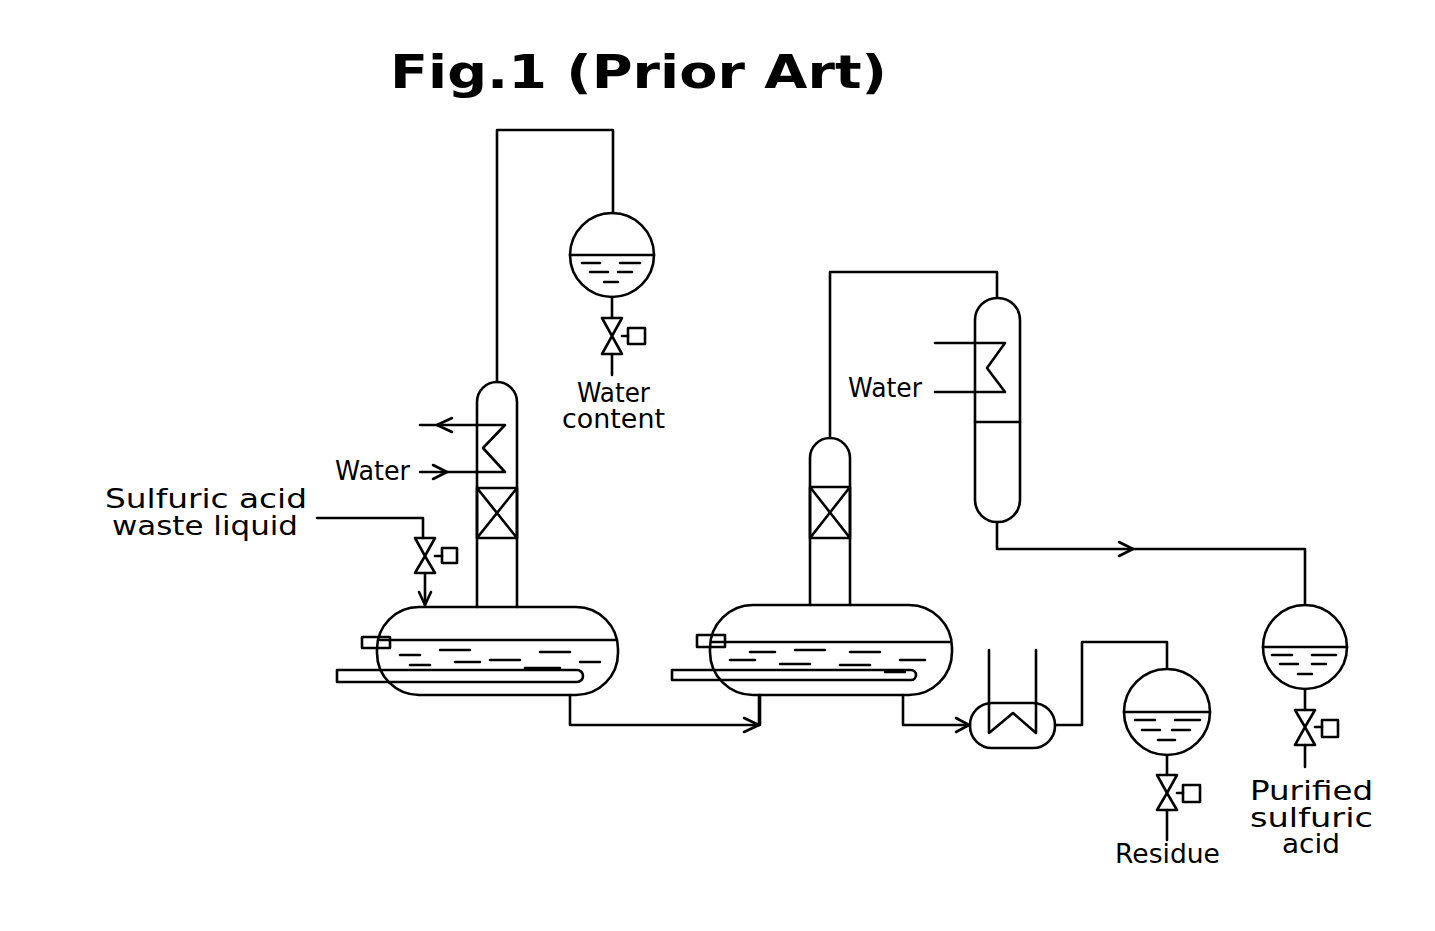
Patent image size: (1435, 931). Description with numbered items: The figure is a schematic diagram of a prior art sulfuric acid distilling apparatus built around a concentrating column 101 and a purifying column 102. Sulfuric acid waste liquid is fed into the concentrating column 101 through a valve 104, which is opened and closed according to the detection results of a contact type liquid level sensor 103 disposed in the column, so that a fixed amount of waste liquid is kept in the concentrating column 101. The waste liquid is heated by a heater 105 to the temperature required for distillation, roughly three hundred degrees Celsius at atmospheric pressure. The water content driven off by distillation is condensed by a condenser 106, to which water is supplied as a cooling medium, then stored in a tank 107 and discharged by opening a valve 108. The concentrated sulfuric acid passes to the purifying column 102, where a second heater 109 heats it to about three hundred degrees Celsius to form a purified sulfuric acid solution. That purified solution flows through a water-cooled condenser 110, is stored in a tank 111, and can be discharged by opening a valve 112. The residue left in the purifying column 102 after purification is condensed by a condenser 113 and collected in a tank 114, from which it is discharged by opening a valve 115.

The concentrating column 101 is at (517, 557).
The purifying column 102 is at (808, 553).
The contact type liquid level sensor 103 is at (363, 637).
The valve 104 is at (415, 545).
The heater 105 is at (352, 683).
The condenser 106 is at (497, 441).
The tank 107 is at (654, 236).
The valve 108 is at (646, 337).
The second heater 109 is at (680, 668).
The condenser 110 is at (1021, 460).
The tank 111 is at (1355, 611).
The valve 112 is at (1340, 728).
The condenser 113 is at (1010, 748).
The tank 114 is at (1193, 673).
The valve 115 is at (1194, 785).